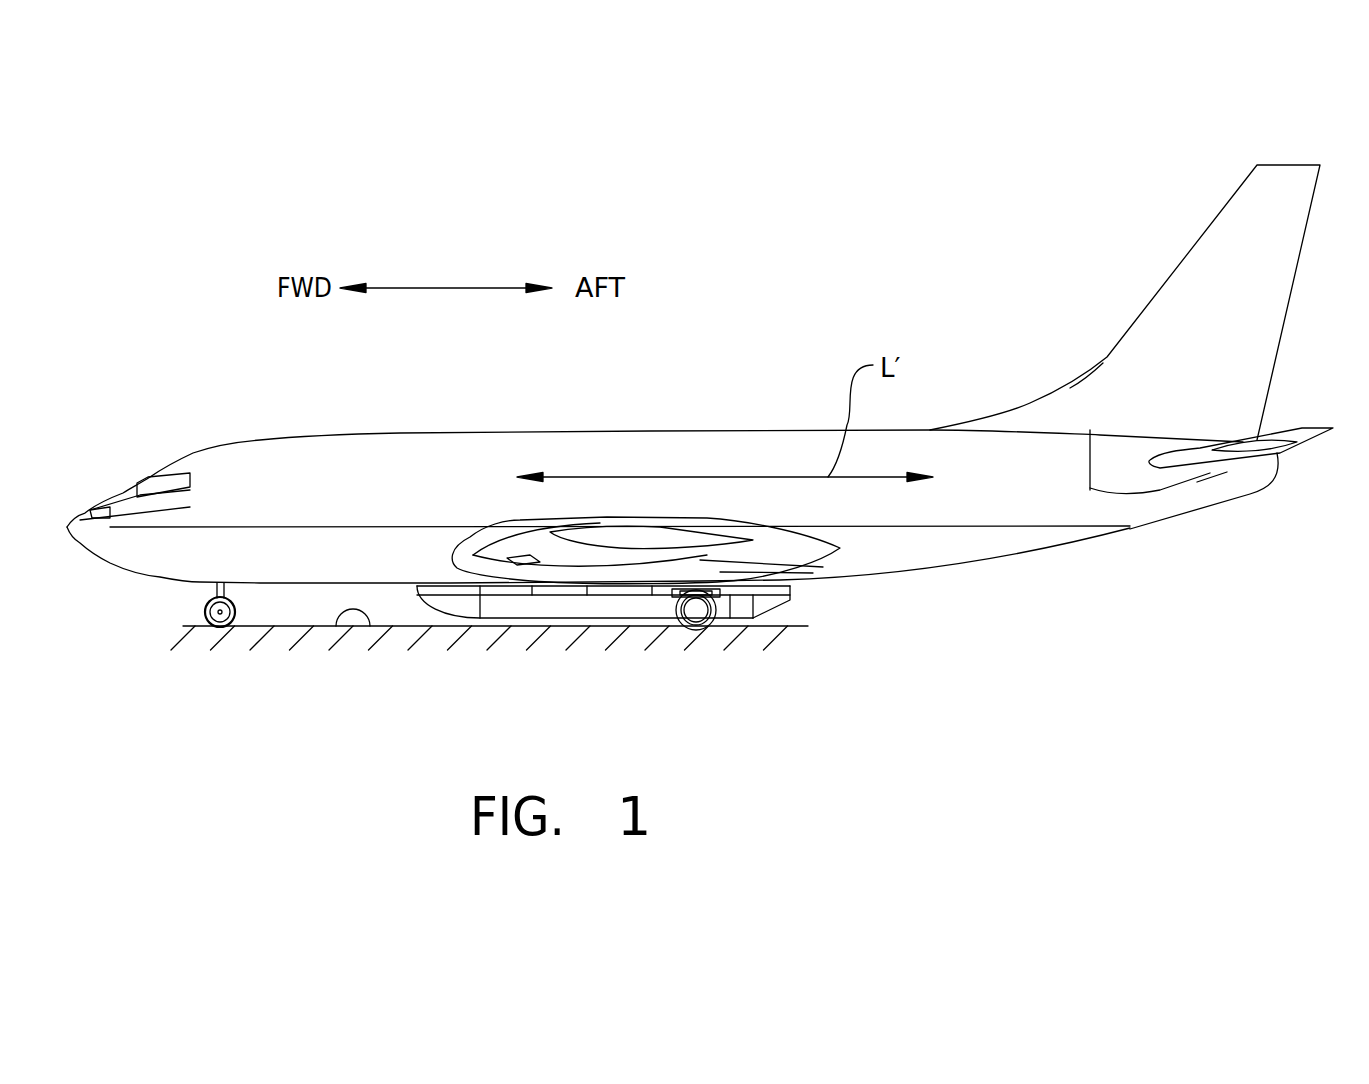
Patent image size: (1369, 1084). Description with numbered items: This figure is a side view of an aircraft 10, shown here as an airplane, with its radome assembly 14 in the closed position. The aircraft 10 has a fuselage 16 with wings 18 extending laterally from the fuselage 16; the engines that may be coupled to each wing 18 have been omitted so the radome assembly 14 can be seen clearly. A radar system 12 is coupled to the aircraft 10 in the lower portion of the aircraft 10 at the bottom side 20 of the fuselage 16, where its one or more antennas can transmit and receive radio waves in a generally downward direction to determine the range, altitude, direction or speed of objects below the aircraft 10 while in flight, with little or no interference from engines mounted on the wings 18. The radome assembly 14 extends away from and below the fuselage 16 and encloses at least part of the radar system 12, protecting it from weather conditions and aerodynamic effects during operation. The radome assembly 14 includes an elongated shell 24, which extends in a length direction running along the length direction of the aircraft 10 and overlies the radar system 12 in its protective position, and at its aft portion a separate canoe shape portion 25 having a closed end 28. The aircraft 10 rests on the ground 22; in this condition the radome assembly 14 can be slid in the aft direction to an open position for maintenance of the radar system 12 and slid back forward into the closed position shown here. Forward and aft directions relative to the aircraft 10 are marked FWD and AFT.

The aircraft 10 is at (728, 368).
The radar system 12 is at (558, 635).
The radome assembly 14 is at (647, 613).
The fuselage 16 is at (600, 452).
The wings 18 is at (477, 533).
The bottom side 20 is at (817, 587).
The ground 22 is at (337, 627).
The shell 24 is at (597, 607).
The canoe shape portion 25 is at (753, 613).
The closed end 28 is at (783, 600).